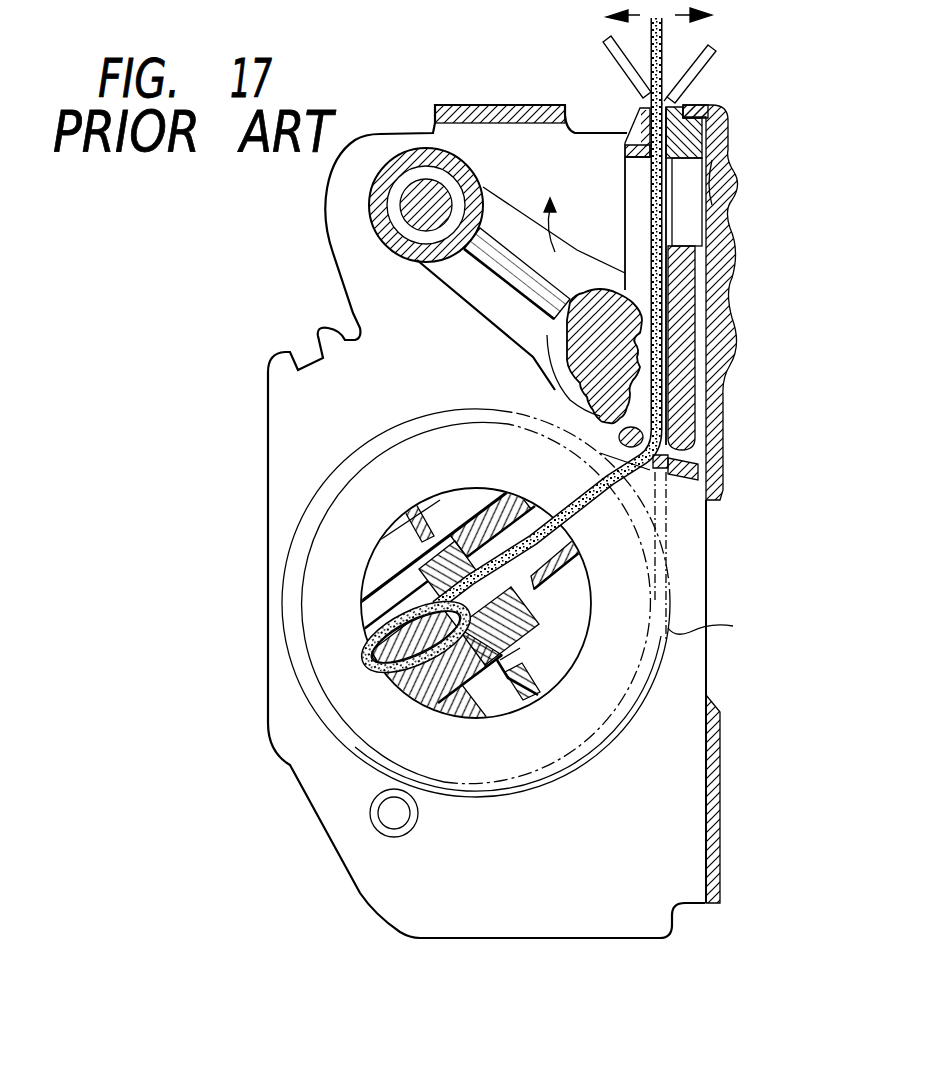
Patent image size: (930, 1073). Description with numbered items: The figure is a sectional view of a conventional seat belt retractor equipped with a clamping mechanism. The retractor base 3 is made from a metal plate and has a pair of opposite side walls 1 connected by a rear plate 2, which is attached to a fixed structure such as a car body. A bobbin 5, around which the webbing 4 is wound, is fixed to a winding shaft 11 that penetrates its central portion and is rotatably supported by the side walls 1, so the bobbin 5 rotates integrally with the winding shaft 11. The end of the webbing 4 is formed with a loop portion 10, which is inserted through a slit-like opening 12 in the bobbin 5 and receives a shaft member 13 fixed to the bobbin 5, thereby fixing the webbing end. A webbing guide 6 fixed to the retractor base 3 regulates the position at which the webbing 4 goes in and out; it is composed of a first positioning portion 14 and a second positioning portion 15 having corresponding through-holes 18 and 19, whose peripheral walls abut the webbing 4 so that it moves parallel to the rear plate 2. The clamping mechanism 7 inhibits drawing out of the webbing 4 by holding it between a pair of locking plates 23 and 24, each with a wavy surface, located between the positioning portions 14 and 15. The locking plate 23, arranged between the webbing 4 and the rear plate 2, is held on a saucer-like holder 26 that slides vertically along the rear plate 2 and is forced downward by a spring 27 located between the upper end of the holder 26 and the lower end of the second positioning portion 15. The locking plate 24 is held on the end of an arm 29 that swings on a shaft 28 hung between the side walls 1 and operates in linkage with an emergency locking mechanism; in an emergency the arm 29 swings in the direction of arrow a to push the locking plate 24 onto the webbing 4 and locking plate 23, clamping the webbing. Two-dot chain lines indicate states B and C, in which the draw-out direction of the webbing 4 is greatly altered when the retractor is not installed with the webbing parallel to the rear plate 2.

The side wall 1 is at (275, 475).
The rear plate 2 is at (733, 386).
The retractor base 3 is at (318, 819).
The webbing 4 is at (668, 52).
The bobbin 5 is at (427, 710).
The webbing guide 6 is at (624, 165).
The clamping mechanism 7 is at (437, 282).
The loop portion 10 is at (367, 640).
The winding shaft 11 is at (500, 660).
The opening 12 is at (570, 540).
The shaft member 13 is at (367, 678).
The first positioning portion 14 is at (622, 458).
The second positioning portion 15 is at (640, 120).
The through-hole 18 is at (640, 480).
The through-hole 19 is at (648, 163).
The locking plate 23 is at (700, 292).
The locking plate 24 is at (595, 395).
The holder 26 is at (707, 212).
The spring 27 is at (675, 192).
The shaft 28 is at (405, 218).
The arm 29 is at (500, 297).